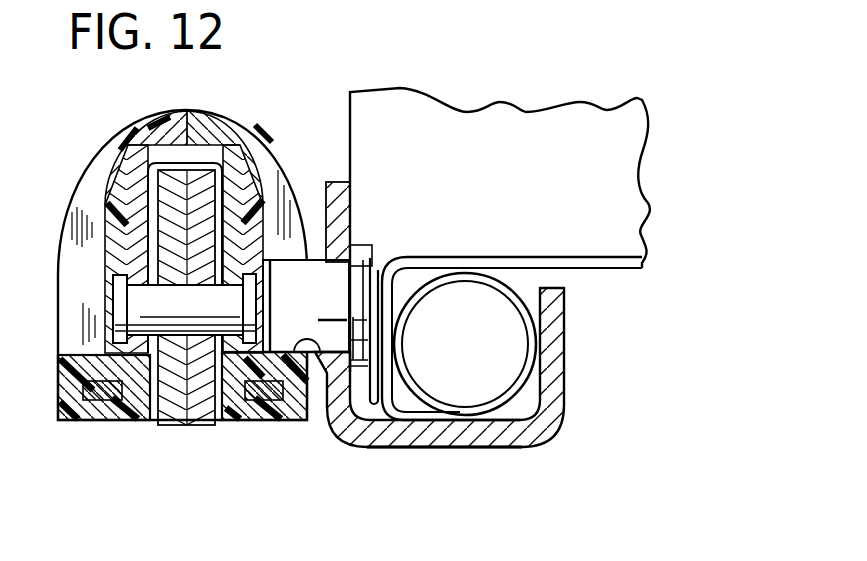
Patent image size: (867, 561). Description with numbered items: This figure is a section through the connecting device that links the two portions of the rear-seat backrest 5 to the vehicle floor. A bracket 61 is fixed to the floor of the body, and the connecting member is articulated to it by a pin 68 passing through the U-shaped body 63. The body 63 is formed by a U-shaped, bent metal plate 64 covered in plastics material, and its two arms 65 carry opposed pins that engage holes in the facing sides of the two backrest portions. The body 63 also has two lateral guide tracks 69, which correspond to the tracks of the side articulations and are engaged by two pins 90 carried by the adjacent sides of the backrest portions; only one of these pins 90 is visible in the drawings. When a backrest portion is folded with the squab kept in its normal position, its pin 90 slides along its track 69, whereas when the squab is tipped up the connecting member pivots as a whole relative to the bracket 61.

The backrest 5 is at (461, 448).
The bracket 61 is at (170, 405).
The U-shaped body 63 is at (258, 141).
The U-shaped bent metal plate 64 is at (128, 418).
The arms 65 is at (70, 393).
The pin 68 is at (133, 295).
The lateral guide tracks 69 is at (72, 350).
The pins 90 is at (338, 282).